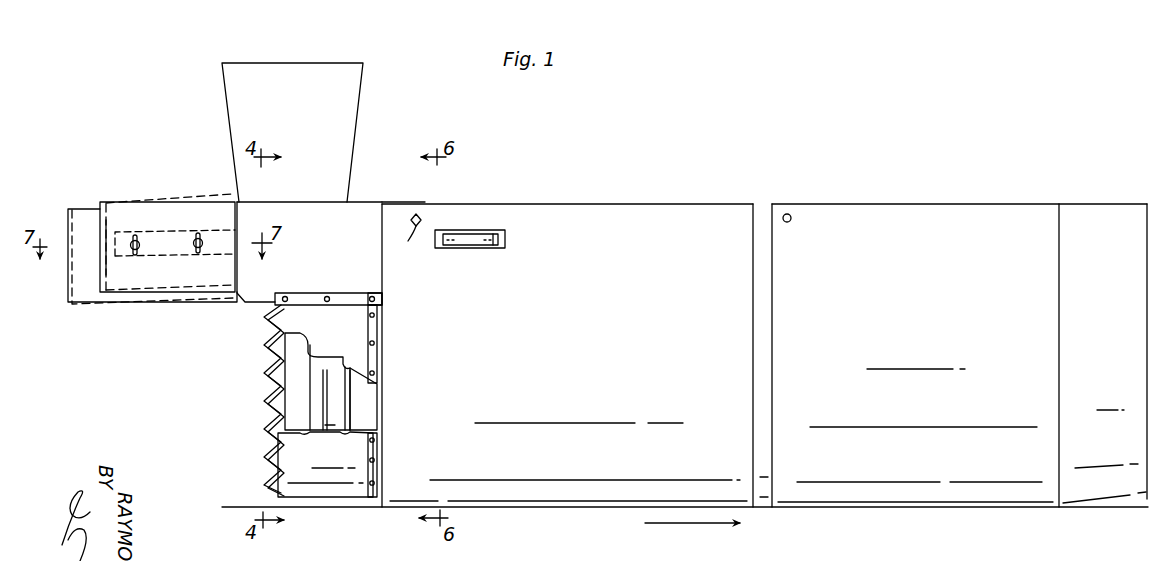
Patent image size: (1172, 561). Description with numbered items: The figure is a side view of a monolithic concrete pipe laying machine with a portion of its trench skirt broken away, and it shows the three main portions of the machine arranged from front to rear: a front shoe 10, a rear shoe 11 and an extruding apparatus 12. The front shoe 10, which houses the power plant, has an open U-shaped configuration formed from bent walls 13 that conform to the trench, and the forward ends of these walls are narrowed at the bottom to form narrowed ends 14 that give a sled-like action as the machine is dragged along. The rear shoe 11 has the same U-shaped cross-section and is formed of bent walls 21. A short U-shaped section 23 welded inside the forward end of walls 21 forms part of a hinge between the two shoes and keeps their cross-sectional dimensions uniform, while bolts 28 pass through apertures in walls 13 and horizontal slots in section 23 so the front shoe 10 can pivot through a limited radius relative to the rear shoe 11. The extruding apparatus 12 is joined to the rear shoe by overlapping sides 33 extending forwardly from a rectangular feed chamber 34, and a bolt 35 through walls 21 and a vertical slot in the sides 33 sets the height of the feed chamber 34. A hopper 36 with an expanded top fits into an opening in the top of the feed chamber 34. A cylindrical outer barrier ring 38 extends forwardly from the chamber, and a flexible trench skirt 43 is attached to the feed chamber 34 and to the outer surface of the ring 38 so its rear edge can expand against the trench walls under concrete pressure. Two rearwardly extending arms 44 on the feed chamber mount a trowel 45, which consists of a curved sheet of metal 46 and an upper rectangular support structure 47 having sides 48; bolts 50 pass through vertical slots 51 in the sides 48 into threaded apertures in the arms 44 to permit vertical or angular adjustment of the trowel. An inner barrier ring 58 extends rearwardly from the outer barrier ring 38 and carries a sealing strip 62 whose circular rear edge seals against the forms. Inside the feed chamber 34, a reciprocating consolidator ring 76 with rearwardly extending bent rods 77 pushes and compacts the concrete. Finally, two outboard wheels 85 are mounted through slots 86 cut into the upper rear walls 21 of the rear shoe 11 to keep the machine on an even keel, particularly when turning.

The front shoe 10 is at (952, 188).
The rear shoe 11 is at (613, 194).
The extruding apparatus 12 is at (198, 184).
The walls 13 is at (933, 266).
The narrowed ends 14 is at (1060, 507).
The walls 21 is at (613, 248).
The U-shaped section 23 is at (760, 212).
The bolts 28 is at (791, 220).
The overlapping sides 33 is at (397, 203).
The feed chamber 34 is at (326, 231).
The bolt 35 is at (411, 239).
The hopper 36 is at (352, 105).
The outer barrier ring 38 is at (376, 408).
The trench skirt 43 is at (317, 491).
The arms 44 is at (167, 249).
The trowel 45 is at (116, 303).
The curved sheet of metal 46 is at (68, 282).
The support structure 47 is at (110, 207).
The sides 48 is at (183, 226).
The bolts 50 is at (133, 243).
The slots 51 is at (200, 238).
The inner barrier ring 58 is at (348, 420).
The sealing strip 62 is at (333, 428).
The consolidator ring 76 is at (309, 398).
The bent rods 77 is at (265, 377).
The outboard wheels 85 is at (450, 235).
The slots 86 is at (438, 249).